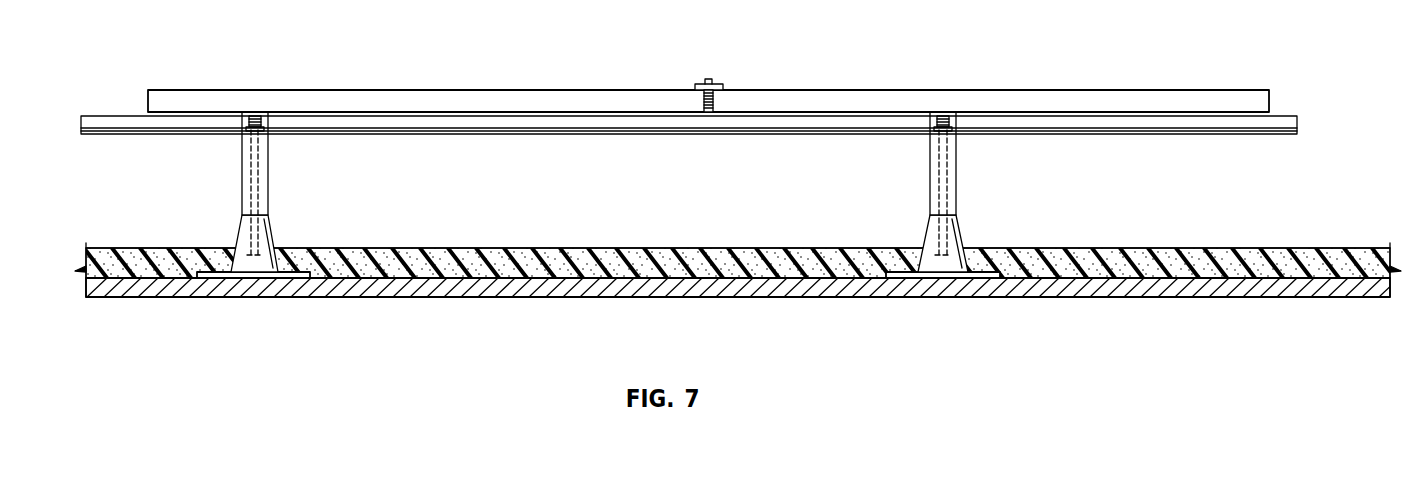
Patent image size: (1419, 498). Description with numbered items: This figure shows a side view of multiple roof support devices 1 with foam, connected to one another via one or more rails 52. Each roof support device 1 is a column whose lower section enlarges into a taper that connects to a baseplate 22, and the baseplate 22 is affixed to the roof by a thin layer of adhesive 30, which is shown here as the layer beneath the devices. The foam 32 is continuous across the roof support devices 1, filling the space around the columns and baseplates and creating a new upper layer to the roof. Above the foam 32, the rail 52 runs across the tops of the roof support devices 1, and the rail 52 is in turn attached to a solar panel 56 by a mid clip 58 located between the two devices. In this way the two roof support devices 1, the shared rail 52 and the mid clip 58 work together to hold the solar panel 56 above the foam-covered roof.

The roof support device 1 is at (287, 202).
The baseplate 22 is at (307, 250).
The adhesive 30 is at (442, 298).
The foam 32 is at (587, 256).
The rail 52 is at (542, 122).
The solar panel 56 is at (364, 97).
The mid clip 58 is at (710, 80).